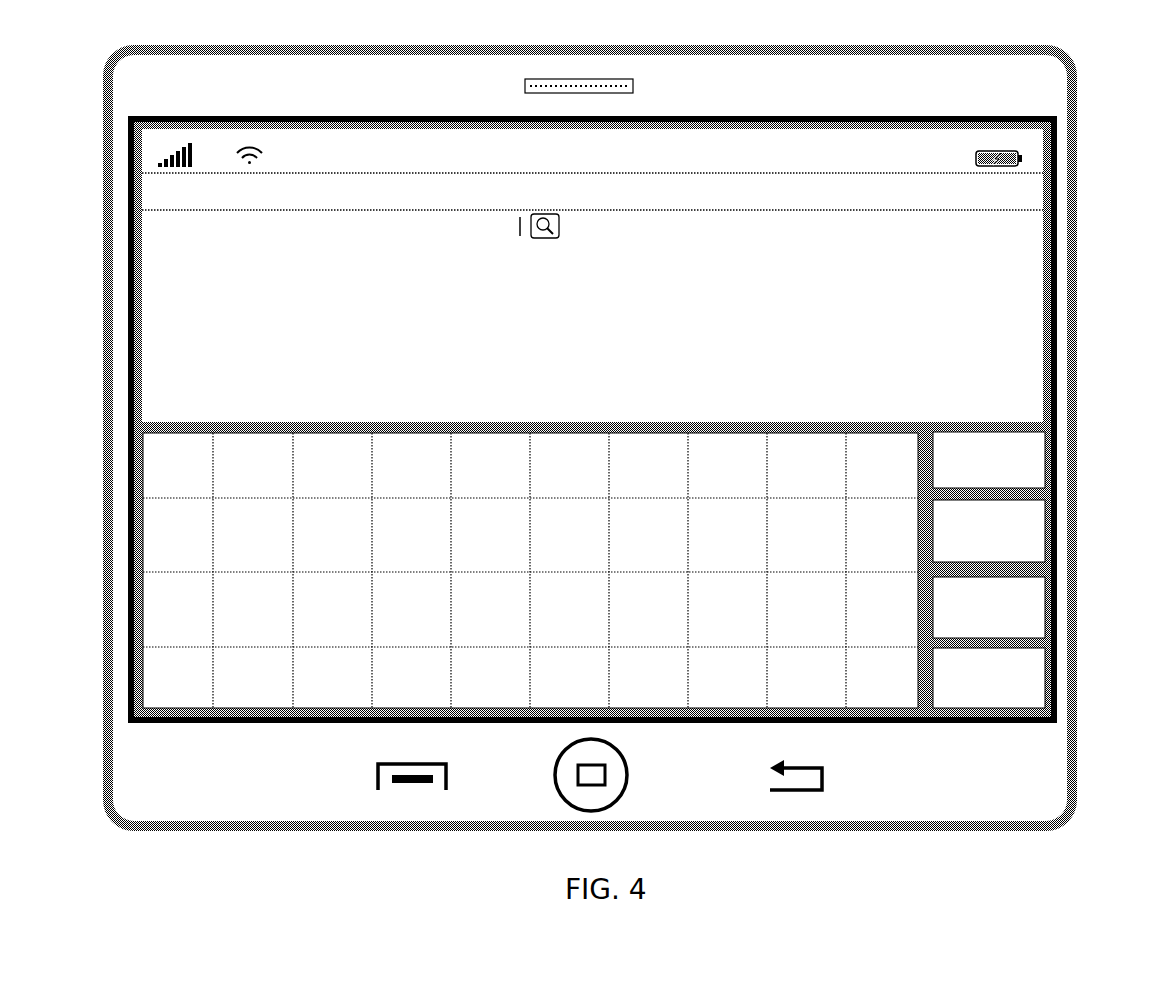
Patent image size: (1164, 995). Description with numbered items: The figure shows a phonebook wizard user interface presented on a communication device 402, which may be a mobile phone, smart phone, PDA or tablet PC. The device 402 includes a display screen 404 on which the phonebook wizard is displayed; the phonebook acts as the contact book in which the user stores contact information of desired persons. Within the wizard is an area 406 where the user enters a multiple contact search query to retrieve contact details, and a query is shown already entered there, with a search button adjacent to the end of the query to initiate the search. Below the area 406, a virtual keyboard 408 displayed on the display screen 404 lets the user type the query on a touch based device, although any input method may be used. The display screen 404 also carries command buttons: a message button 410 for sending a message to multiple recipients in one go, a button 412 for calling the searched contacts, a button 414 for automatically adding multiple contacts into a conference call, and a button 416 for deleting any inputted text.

The communication device 402 is at (1078, 243).
The display screen 404 is at (272, 722).
The area 406 is at (960, 212).
The virtual keyboard 408 is at (277, 425).
The message button 410 is at (1033, 462).
The call button 412 is at (1030, 532).
The conference button 414 is at (1037, 594).
The backspace button 416 is at (1040, 668).